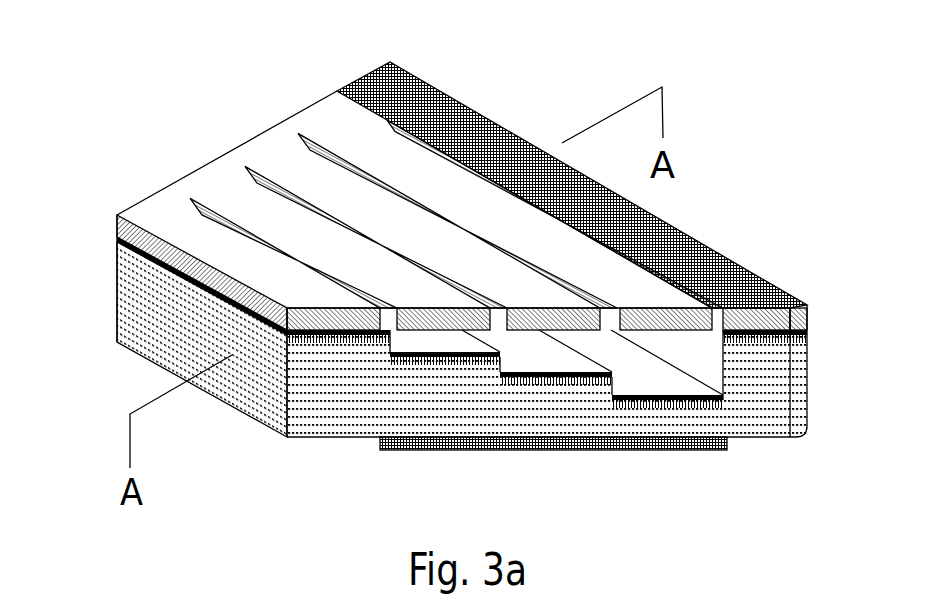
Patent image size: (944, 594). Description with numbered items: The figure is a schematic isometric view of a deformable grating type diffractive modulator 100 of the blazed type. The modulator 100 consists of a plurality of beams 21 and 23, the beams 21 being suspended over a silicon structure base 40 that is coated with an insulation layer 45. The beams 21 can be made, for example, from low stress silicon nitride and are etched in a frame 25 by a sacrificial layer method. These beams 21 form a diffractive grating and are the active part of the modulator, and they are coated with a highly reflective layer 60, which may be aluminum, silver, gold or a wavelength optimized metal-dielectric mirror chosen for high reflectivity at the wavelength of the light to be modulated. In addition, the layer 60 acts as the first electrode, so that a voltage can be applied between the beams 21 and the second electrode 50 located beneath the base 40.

The deformable grating type diffractive modulator 100 is at (150, 150).
The beams 21 is at (406, 290).
The beams 23 is at (197, 223).
The frame 25 is at (763, 296).
The highly reflective layer 60 is at (117, 217).
The insulation layer 45 is at (117, 238).
The silicon structure base 40 is at (162, 337).
The second electrode 50 is at (392, 448).